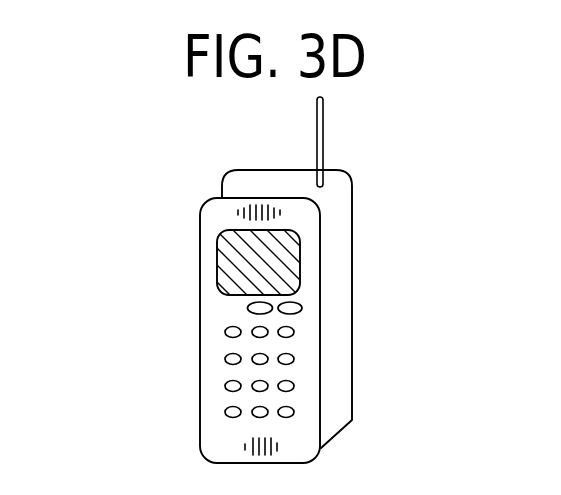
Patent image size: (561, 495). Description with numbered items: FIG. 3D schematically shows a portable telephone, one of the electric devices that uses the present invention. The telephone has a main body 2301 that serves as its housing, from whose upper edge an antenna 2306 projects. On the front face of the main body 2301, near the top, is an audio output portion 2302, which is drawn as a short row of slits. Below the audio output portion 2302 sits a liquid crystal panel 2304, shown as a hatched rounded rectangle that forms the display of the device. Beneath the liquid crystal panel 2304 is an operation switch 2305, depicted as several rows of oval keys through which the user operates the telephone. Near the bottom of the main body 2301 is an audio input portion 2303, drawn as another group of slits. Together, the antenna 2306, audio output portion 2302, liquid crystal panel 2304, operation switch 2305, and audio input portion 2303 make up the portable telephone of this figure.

The main body 2301 is at (252, 178).
The audio output portion 2302 is at (252, 211).
The audio input portion 2303 is at (245, 447).
The liquid crystal panel 2304 is at (226, 268).
The operation switch 2305 is at (248, 308).
The antenna 2306 is at (323, 142).